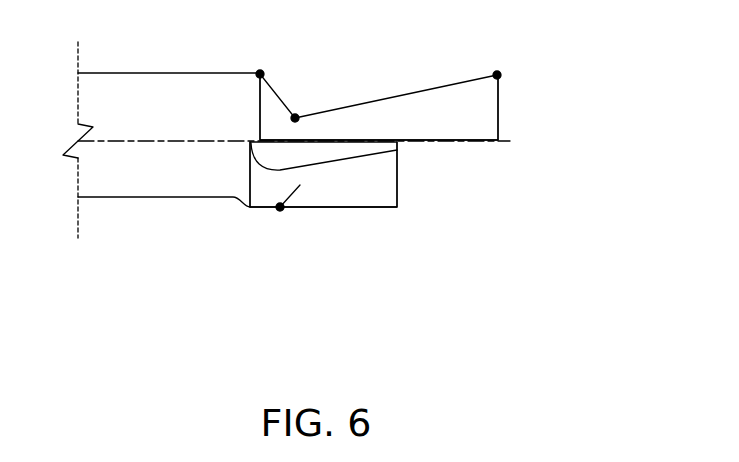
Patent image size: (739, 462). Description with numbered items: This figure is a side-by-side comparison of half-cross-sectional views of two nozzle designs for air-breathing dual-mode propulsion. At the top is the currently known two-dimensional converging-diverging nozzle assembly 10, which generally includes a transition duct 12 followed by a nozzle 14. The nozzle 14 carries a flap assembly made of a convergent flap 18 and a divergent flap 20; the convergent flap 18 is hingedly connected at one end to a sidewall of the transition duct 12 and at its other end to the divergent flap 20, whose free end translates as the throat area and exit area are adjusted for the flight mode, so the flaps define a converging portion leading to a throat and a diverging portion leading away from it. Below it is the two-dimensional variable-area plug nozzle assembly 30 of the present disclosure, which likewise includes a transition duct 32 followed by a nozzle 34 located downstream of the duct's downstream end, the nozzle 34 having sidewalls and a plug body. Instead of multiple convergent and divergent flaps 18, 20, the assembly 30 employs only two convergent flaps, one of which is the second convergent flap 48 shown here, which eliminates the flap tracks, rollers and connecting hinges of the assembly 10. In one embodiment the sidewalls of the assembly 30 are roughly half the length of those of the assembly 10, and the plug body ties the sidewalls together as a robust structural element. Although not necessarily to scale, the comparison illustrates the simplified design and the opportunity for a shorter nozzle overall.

The two-dimensional converging-diverging nozzle assembly 10 is at (540, 67).
The transition duct 12 is at (137, 72).
The nozzle 14 is at (485, 117).
The convergent flap 18 is at (275, 93).
The divergent flap 20 is at (417, 92).
The 2D variable-area plug nozzle assembly 30 is at (405, 240).
The transition duct 32 is at (157, 198).
The nozzle 34 is at (383, 172).
The second convergent flap 48 is at (287, 211).